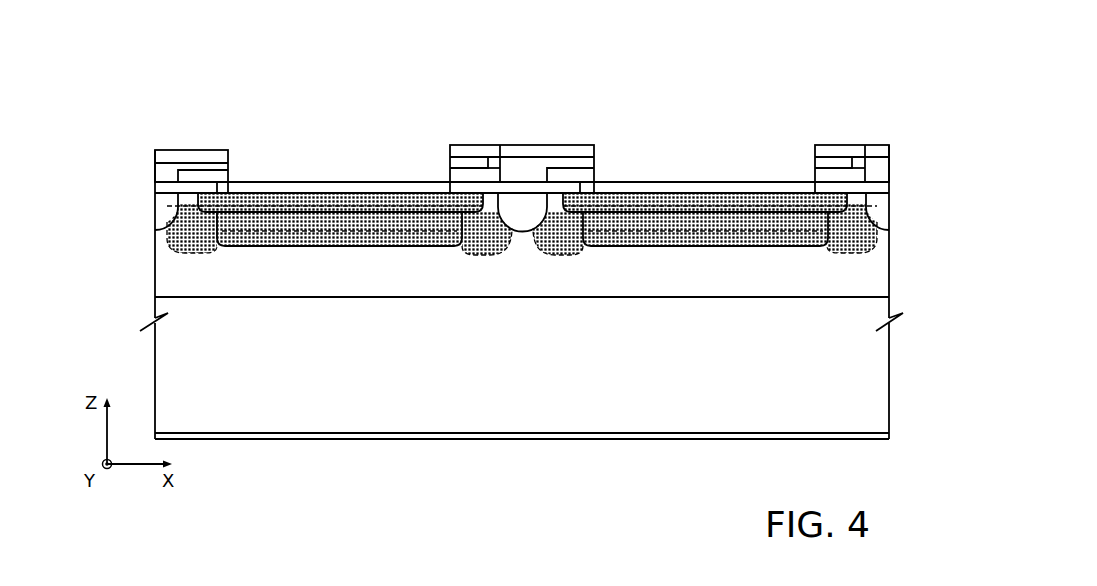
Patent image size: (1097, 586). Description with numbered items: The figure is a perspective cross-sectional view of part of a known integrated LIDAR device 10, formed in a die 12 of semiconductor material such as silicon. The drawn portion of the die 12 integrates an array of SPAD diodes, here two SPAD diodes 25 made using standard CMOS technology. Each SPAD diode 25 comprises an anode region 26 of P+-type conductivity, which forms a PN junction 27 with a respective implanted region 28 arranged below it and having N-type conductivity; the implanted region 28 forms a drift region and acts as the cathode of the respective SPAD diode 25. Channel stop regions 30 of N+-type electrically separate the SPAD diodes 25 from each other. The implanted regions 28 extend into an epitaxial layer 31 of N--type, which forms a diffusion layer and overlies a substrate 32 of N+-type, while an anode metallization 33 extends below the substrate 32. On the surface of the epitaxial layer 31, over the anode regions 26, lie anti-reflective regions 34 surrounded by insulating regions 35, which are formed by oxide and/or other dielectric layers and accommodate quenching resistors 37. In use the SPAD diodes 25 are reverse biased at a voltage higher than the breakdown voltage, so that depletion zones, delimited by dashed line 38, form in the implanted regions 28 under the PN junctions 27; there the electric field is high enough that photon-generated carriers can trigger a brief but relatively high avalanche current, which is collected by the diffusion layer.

The LIDAR device 10 is at (80, 53).
The die 12 is at (893, 250).
The SPAD diode 25 is at (305, 125).
The anode region 26 is at (255, 200).
The PN junction 27 is at (371, 205).
The implanted region 28 is at (393, 247).
The channel stop region 30 is at (520, 250).
The epitaxial layer 31 is at (265, 290).
The substrate 32 is at (265, 397).
The anode metallization 33 is at (892, 434).
The anti-reflective region 34 is at (422, 187).
The insulating region 35 is at (207, 150).
The quenching resistor 37 is at (189, 172).
The dashed line 38 is at (340, 242).